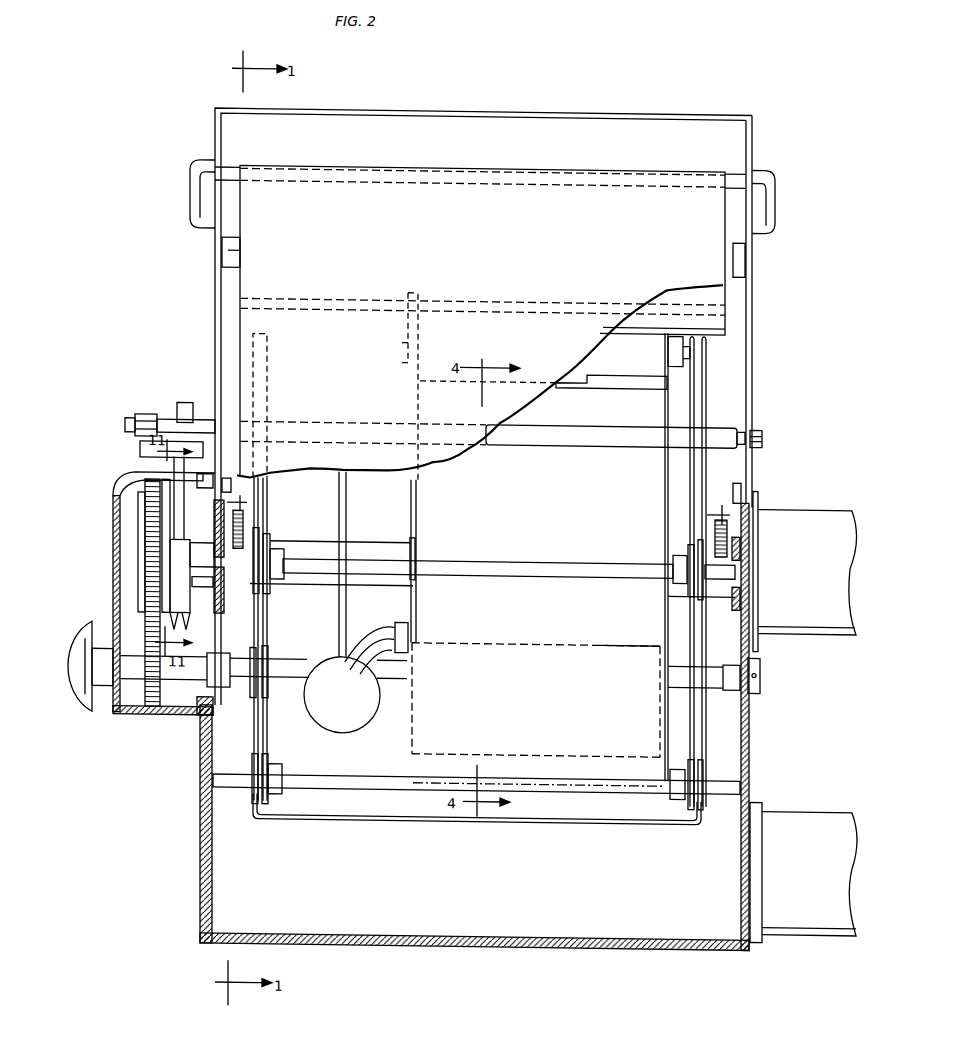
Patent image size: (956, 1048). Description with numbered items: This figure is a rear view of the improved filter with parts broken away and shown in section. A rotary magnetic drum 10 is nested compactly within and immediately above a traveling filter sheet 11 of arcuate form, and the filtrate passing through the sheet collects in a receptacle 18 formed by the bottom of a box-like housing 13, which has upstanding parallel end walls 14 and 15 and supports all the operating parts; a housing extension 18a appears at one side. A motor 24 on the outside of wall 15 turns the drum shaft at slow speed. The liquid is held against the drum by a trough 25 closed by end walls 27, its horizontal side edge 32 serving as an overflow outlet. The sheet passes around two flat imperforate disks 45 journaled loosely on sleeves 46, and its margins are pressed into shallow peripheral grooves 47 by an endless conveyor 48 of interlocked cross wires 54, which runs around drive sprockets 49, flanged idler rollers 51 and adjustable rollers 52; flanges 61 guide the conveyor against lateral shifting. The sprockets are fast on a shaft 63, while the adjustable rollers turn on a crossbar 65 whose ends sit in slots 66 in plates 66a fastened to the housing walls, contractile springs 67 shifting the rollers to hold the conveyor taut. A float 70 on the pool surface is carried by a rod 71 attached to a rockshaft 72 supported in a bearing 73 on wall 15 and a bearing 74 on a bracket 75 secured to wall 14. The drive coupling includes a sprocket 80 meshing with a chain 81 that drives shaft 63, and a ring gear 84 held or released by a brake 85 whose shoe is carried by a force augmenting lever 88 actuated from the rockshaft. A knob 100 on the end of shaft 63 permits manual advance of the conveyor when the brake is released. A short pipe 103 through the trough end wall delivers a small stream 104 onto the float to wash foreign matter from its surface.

The rotary magnetic drum 10 is at (420, 487).
The traveling sheet 11 is at (443, 453).
The box-like housing 13 is at (513, 945).
The end wall 14 is at (215, 325).
The end wall 15 is at (749, 348).
The receptacle 18 is at (201, 879).
The housing extension 18a is at (808, 807).
The motor 24 is at (838, 503).
The trough 25 is at (411, 730).
The end wall 27 is at (411, 755).
The side edge 32 is at (547, 633).
The disk 45 is at (259, 722).
The sleeve 46 is at (374, 541).
The groove 47 is at (263, 730).
The conveyor 48 is at (396, 821).
The drive sprocket 49 is at (252, 688).
The flanged idler roller 51 is at (255, 792).
The adjustable roller 52 is at (271, 546).
The cross wire 54 is at (433, 817).
The flange 61 is at (270, 758).
The shaft 63 is at (307, 662).
The crossbar 65 is at (465, 561).
The slot 66 is at (220, 576).
The plate 66a is at (231, 487).
The contractile spring 67 is at (245, 523).
The float 70 is at (340, 732).
The rod 71 is at (340, 626).
The rockshaft 72 is at (557, 437).
The bearing 73 is at (736, 418).
The bearing 74 is at (160, 409).
The bracket 75 is at (141, 452).
The sprocket 80 is at (138, 515).
The chain 81 is at (148, 633).
The ring gear 84 is at (182, 612).
The brake 85 is at (205, 609).
The force augmenting lever 88 is at (212, 489).
The knob 100 is at (85, 634).
The short pipe 103 is at (401, 623).
The stream 104 is at (380, 645).